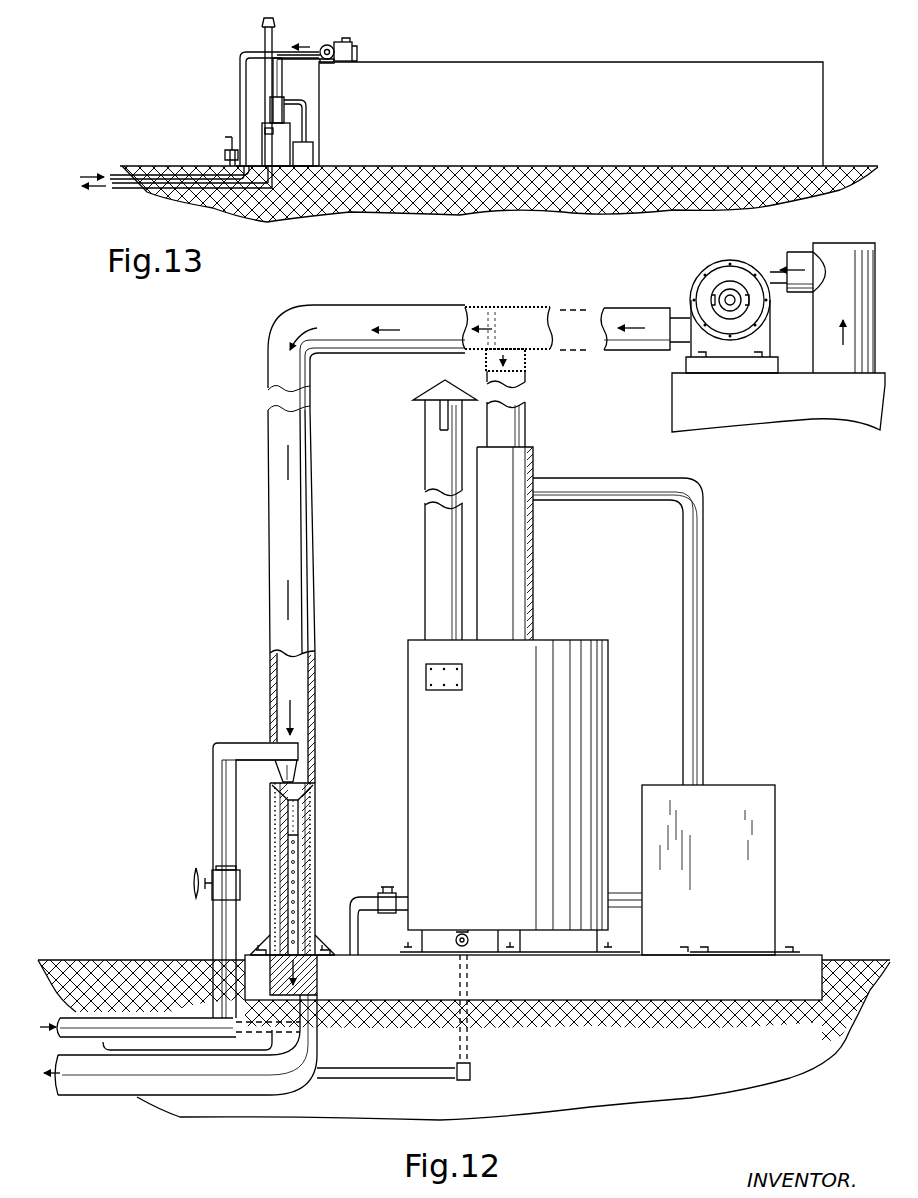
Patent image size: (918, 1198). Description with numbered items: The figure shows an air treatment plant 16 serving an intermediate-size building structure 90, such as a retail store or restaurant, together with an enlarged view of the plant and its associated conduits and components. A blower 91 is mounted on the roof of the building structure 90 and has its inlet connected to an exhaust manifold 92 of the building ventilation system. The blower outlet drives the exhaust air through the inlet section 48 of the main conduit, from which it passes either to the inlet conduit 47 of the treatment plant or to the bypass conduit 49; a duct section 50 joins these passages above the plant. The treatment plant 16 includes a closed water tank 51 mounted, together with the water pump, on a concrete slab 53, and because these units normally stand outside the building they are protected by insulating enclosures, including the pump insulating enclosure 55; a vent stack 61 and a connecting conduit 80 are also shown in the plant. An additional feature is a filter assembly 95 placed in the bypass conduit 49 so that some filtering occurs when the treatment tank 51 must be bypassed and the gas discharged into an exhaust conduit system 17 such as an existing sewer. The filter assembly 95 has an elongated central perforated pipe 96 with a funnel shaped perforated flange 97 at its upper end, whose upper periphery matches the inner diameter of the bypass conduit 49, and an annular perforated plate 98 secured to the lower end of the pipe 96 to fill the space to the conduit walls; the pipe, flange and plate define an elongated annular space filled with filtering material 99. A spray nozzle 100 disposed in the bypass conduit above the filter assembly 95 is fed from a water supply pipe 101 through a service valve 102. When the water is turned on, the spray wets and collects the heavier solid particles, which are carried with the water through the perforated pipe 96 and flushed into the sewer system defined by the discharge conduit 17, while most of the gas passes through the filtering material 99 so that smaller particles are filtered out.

In FIG. 13, the treatment plant 16 is at (234, 106).
In FIG. 12, the exhaust conduit system 17 is at (126, 1076).
In FIG. 12, the inlet conduit 47 is at (523, 422).
In FIG. 13, the inlet section of the main conduit 48 is at (298, 61).
In FIG. 12, the inlet section of the main conduit 48 is at (642, 313).
In FIG. 12, the bypass conduit 49 is at (280, 557).
In FIG. 12, the duct section 50 is at (488, 344).
In FIG. 12, the closed water tank 51 is at (590, 630).
In FIG. 12, the concrete slab 53 is at (676, 990).
In FIG. 12, the pump insulating enclosure 55 is at (770, 776).
In FIG. 12, the vent stack 61 is at (435, 541).
In FIG. 12, the connecting conduit 80 is at (690, 558).
In FIG. 13, the building structure 90 is at (588, 119).
In FIG. 12, the building structure 90 is at (799, 407).
In FIG. 13, the blower 91 is at (327, 44).
In FIG. 12, the blower 91 is at (706, 290).
In FIG. 13, the exhaust manifold 92 is at (354, 46).
In FIG. 12, the exhaust manifold 92 is at (860, 253).
In FIG. 12, the filter assembly 95 is at (300, 786).
In FIG. 12, the central perforated pipe 96 is at (300, 890).
In FIG. 12, the funnel shaped perforated flange 97 is at (304, 808).
In FIG. 12, the annular perforated plate 98 is at (278, 945).
In FIG. 12, the filtering material 99 is at (310, 866).
In FIG. 12, the spray nozzle 100 is at (300, 766).
In FIG. 12, the water supply pipe 101 is at (214, 808).
In FIG. 12, the service valve 102 is at (232, 880).